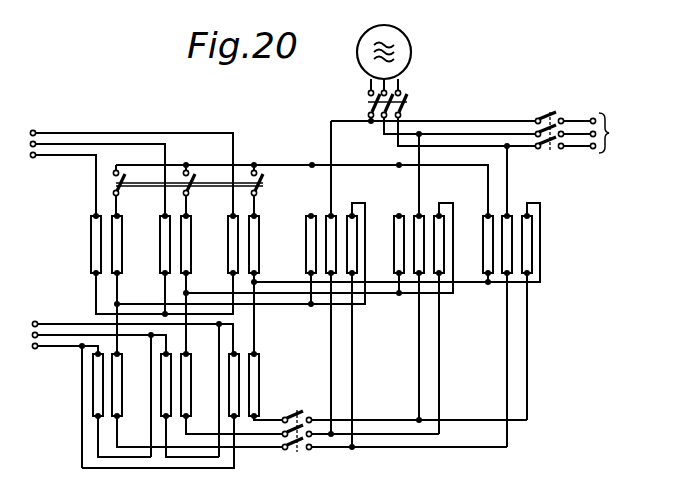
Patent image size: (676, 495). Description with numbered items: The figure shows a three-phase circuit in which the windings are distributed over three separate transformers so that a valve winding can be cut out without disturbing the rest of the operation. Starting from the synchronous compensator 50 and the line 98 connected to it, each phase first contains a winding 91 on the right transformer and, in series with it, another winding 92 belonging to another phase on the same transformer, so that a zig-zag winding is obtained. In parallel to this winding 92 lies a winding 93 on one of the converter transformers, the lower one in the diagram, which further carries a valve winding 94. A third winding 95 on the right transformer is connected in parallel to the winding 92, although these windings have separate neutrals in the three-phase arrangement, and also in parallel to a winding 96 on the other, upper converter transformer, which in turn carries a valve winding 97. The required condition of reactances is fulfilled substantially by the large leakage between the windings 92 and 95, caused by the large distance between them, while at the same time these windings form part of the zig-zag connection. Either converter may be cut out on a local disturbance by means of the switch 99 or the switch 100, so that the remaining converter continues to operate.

The synchronous compensator 50 is at (408, 58).
The winding 91 is at (331, 245).
The winding 92 is at (353, 228).
The winding 93 is at (119, 375).
The valve winding 94 is at (100, 385).
The third winding 95 is at (306, 264).
The winding 96 is at (117, 223).
The valve winding 97 is at (98, 242).
The line 98 is at (582, 132).
The switch 99 is at (212, 182).
The switch 100 is at (305, 452).